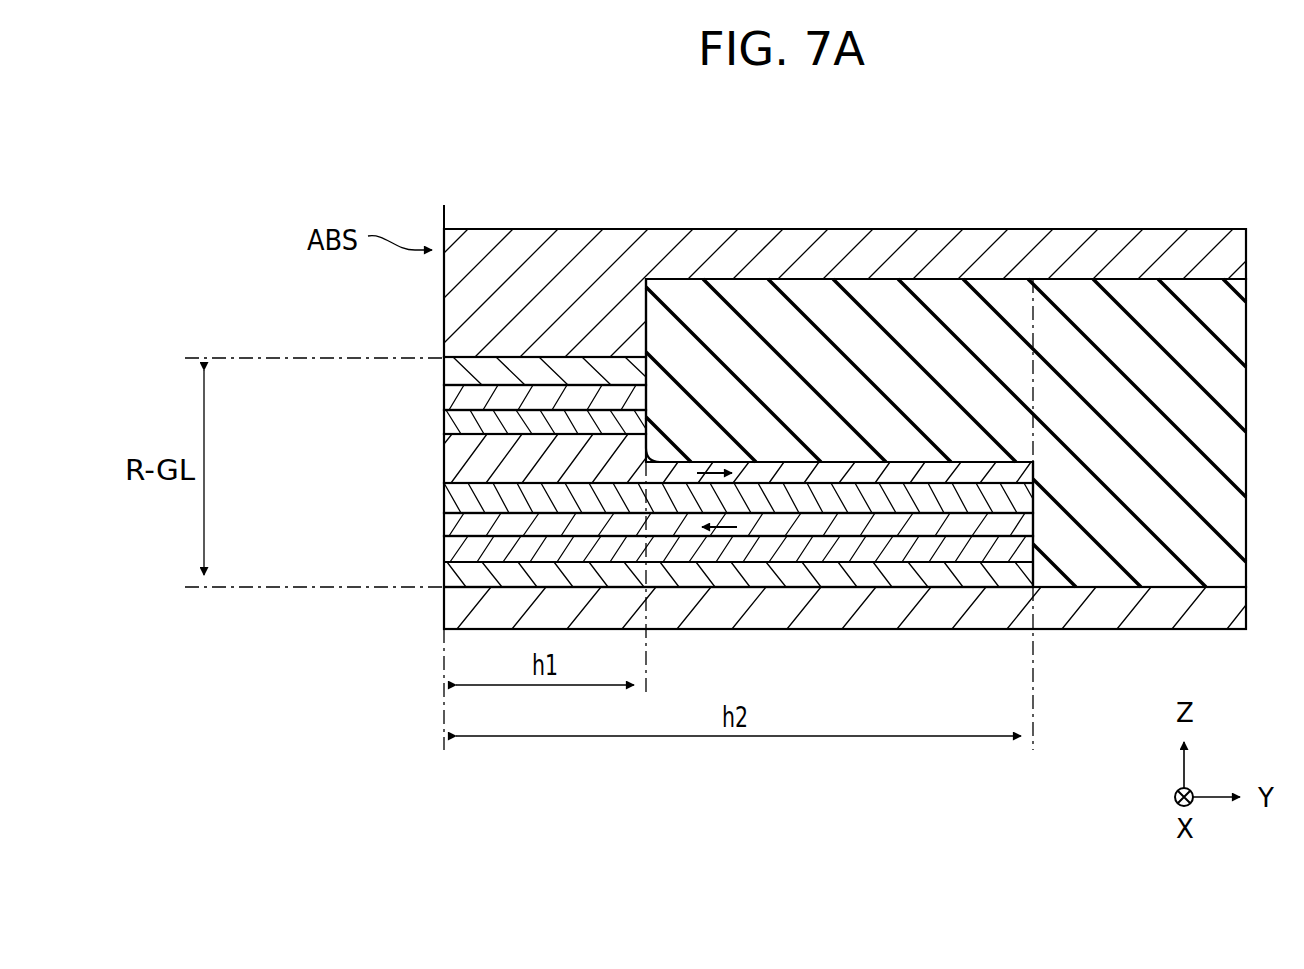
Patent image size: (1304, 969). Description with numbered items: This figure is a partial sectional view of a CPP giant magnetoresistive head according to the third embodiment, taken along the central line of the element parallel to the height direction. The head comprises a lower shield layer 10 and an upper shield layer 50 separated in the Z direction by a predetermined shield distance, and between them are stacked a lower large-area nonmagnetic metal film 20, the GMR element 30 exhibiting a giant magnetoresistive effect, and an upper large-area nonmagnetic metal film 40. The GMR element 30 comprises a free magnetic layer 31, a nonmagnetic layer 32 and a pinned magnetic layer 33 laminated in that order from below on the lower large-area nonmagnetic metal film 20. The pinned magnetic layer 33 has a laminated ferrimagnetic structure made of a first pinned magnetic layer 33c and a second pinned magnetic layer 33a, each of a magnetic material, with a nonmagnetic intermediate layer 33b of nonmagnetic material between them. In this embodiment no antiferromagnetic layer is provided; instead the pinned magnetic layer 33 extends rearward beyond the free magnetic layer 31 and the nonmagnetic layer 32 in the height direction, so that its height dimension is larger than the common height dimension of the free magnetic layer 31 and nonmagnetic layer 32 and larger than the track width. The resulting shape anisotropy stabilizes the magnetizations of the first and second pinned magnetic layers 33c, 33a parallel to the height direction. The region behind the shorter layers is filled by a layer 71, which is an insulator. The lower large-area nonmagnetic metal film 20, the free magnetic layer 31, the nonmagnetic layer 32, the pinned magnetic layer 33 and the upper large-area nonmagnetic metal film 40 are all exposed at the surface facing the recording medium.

The lower shield layer 10 is at (452, 605).
The lower large-area nonmagnetic metal film 20 is at (430, 537).
The GMR element 30 is at (301, 370).
The free magnetic layer 31 is at (457, 397).
The nonmagnetic layer 32 is at (457, 423).
The pinned magnetic layer 33 is at (367, 433).
The second pinned magnetic layer 33a is at (458, 528).
The nonmagnetic intermediate layer 33b is at (458, 501).
The first pinned magnetic layer 33c is at (458, 463).
The upper large-area nonmagnetic metal film 40 is at (456, 372).
The upper shield layer 50 is at (480, 292).
The insulator 71 is at (933, 302).